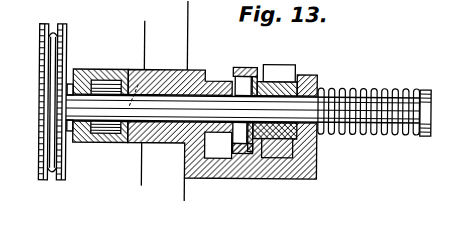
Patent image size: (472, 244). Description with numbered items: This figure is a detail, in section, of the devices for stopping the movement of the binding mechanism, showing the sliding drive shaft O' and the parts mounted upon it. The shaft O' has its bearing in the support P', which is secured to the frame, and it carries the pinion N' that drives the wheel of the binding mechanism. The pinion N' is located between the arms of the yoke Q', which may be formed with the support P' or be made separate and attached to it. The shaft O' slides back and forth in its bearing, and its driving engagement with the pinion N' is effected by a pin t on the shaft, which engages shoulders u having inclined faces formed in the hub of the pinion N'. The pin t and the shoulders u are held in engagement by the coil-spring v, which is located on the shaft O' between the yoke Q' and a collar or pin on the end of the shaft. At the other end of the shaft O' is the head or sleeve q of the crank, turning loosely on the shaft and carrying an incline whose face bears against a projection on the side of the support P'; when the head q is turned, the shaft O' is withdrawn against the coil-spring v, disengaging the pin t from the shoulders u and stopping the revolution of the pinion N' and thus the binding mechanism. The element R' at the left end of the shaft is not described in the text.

The pulley wheel R' is at (40, 102).
The shaft O' is at (243, 109).
The support P' is at (153, 53).
The pin t is at (245, 81).
The pinion N' is at (278, 101).
The head or sleeve q is at (99, 146).
The yoke Q' is at (222, 163).
The shoulders u is at (243, 137).
The coil-spring v is at (374, 107).